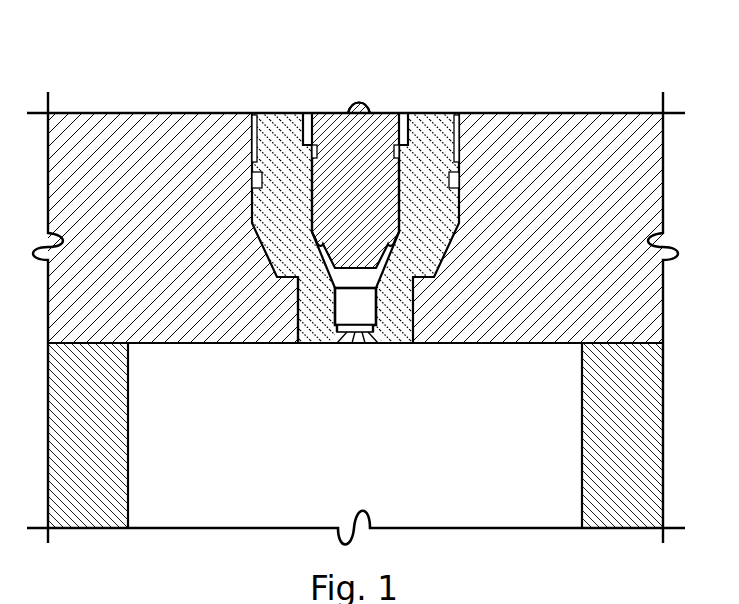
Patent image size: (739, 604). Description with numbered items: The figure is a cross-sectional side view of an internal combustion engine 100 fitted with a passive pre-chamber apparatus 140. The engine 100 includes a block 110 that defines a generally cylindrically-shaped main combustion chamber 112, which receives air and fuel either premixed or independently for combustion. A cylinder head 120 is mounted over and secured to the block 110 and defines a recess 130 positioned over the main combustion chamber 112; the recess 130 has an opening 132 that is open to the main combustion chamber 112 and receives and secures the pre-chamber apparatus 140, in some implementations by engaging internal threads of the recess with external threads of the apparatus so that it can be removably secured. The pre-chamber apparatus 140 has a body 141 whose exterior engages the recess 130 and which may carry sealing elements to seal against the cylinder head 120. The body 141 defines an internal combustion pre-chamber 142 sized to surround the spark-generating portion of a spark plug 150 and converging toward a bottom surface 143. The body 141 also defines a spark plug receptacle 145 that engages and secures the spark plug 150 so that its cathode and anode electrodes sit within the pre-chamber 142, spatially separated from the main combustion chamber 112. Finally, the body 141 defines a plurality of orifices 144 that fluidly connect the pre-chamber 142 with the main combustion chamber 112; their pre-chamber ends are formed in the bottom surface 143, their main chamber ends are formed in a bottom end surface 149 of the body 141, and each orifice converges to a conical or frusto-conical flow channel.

The internal combustion engine 100 is at (621, 60).
The block 110 is at (623, 513).
The main combustion chamber 112 is at (372, 456).
The cylinder head 120 is at (543, 127).
The recess 130 is at (460, 233).
The opening 132 is at (300, 323).
The pre-chamber apparatus 140 is at (345, 235).
The body 141 is at (270, 140).
The combustion pre-chamber 142 is at (362, 282).
The bottom surface 143 is at (352, 327).
The orifices 144 is at (337, 342).
The spark plug receptacle 145 is at (330, 152).
The bottom end surface 149 is at (400, 347).
The spark plug 150 is at (393, 123).